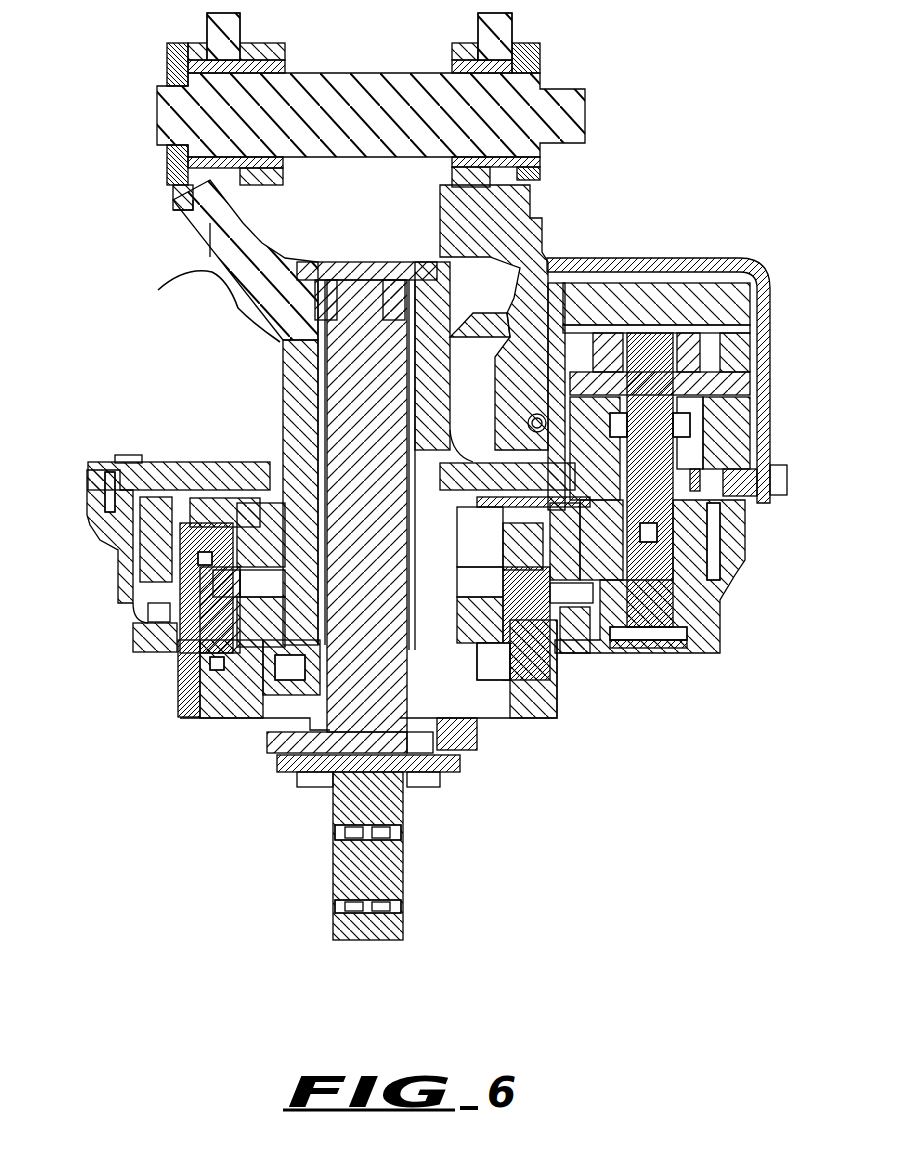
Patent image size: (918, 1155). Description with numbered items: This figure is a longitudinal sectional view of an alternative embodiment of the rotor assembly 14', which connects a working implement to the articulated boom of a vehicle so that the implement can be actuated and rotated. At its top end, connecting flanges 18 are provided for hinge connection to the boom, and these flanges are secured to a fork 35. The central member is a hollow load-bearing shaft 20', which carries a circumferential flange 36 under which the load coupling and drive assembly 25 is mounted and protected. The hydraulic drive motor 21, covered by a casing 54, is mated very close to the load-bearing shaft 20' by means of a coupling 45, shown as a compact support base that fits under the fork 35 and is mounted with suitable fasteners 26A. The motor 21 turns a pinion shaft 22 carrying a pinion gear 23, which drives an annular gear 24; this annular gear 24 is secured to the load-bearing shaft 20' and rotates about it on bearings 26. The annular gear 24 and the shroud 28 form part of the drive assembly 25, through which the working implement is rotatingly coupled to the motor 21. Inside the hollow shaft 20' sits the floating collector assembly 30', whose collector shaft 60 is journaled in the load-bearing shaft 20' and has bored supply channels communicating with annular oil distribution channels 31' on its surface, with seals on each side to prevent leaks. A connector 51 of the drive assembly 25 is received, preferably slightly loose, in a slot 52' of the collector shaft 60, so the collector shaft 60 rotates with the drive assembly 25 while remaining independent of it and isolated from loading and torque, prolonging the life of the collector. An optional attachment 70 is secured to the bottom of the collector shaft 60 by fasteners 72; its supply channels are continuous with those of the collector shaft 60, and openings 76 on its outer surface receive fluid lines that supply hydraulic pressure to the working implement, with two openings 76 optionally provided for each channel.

The rotor assembly 14' is at (709, 135).
The connecting flanges 18 is at (470, 52).
The load-bearing shaft 20' is at (381, 455).
The hydraulic drive motor 21 is at (712, 298).
The pinion shaft 22 is at (735, 374).
The pinion gear 23 is at (712, 565).
The annular gear 24 is at (150, 548).
The load coupling and drive assembly 25 is at (172, 692).
The bearings 26 is at (255, 545).
The fasteners 26A is at (552, 288).
The shroud 28 is at (560, 700).
The floating collector assembly 30' is at (350, 475).
The annular oil distribution channels 31' is at (367, 259).
The fork 35 is at (240, 270).
The circumferential flange 36 is at (156, 460).
The coupling 45 is at (715, 425).
The connector 51 is at (477, 737).
The slot 52' is at (403, 779).
The casing 54 is at (670, 260).
The collector shaft 60 is at (335, 605).
The attachment 70 is at (400, 935).
The fasteners 72 is at (313, 790).
The openings 76 is at (335, 905).